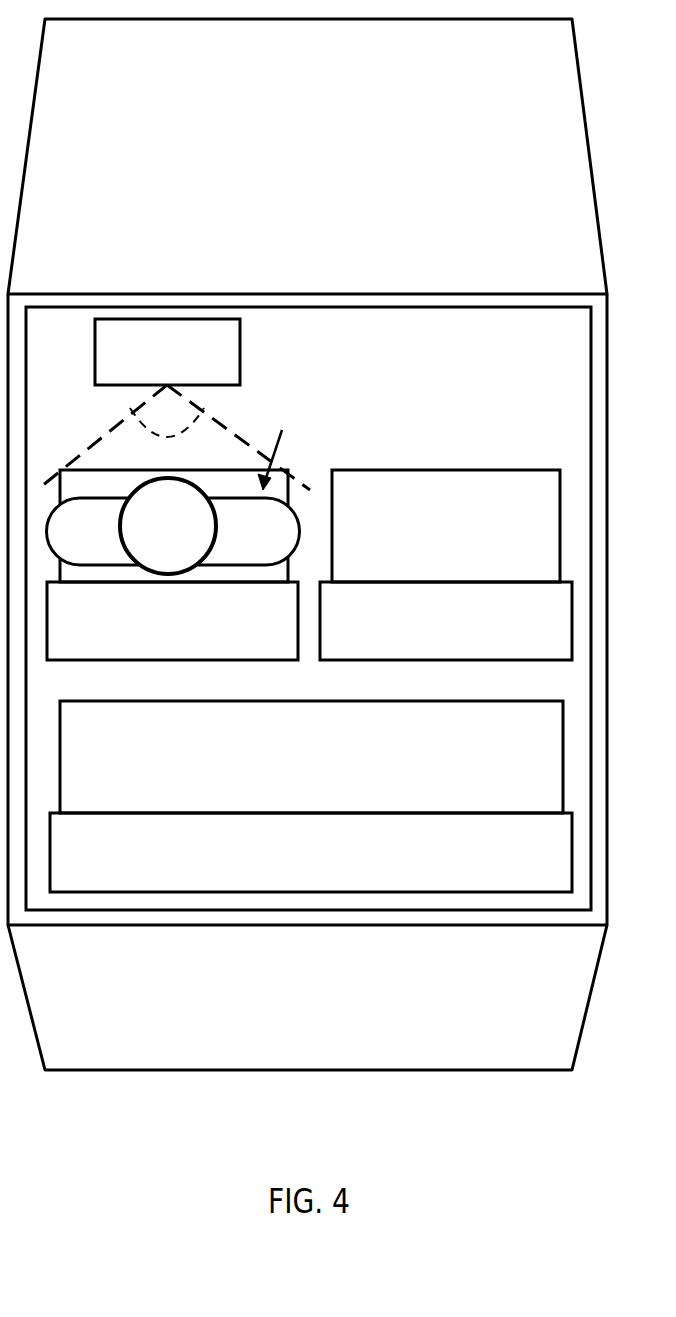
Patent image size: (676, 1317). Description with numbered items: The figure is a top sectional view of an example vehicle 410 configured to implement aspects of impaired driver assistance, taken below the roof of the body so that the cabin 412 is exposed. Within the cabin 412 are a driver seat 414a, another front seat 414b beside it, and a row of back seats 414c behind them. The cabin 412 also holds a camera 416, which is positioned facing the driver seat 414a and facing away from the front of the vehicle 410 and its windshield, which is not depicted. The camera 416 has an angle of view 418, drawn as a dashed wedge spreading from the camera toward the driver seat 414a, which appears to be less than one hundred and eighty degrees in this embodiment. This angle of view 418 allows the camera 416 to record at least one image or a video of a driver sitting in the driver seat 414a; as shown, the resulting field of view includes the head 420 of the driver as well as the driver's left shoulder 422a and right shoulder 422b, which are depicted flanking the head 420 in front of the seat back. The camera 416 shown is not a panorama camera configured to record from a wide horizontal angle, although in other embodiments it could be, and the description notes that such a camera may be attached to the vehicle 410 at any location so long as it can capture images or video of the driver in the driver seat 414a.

The vehicle 410 is at (293, 137).
The cabin 412 is at (296, 377).
The driver seat 414a is at (152, 645).
The front seat 414b is at (424, 646).
The back seats 414c is at (289, 879).
The camera 416 is at (152, 377).
The angle of view 418 is at (173, 437).
The head 420 is at (152, 554).
The left shoulder 422a is at (116, 542).
The right shoulder 422b is at (276, 542).